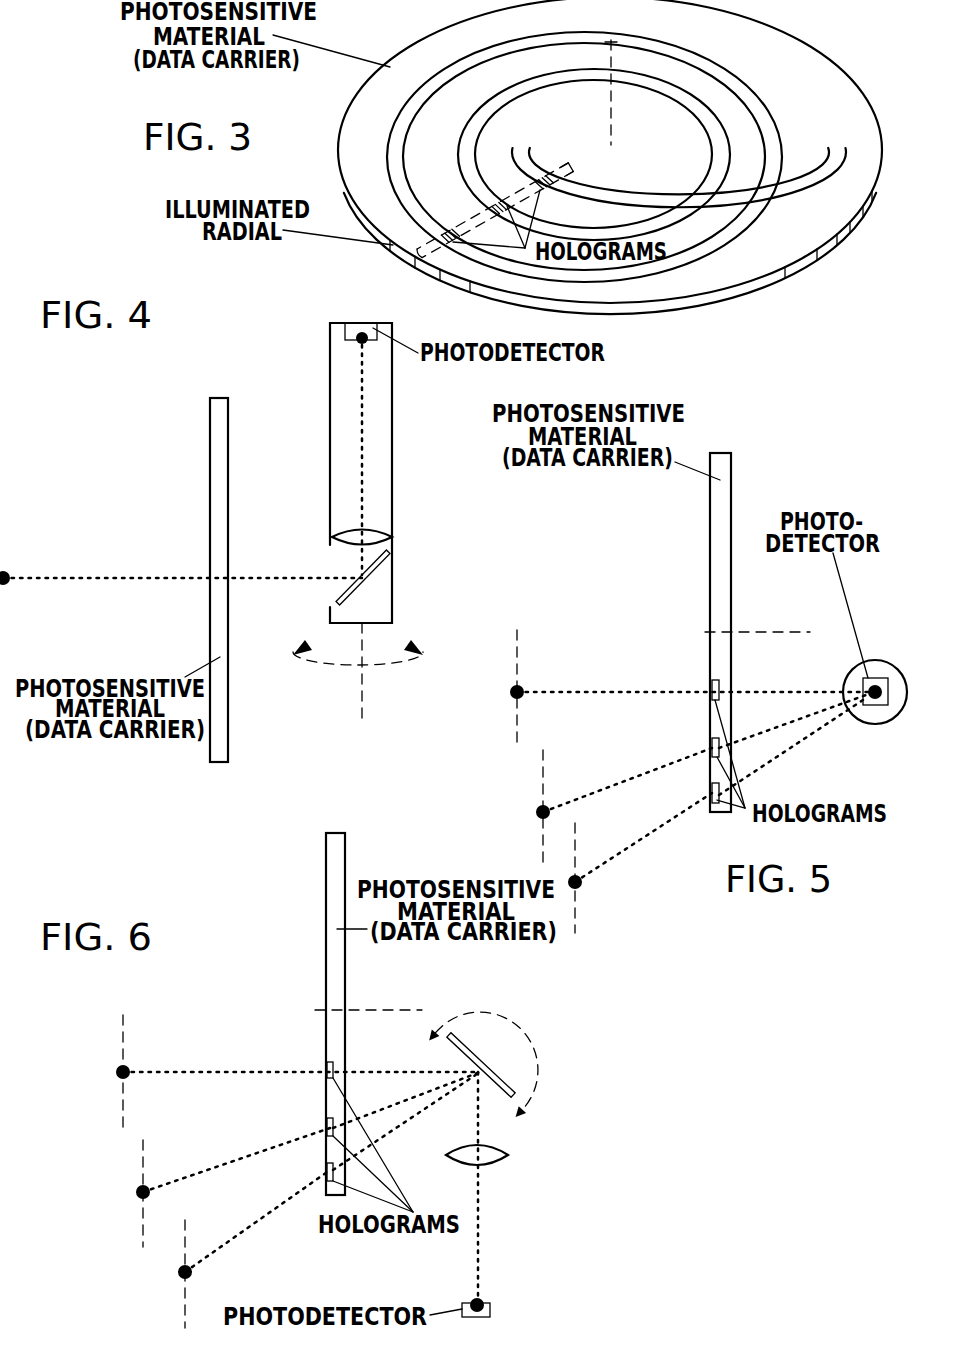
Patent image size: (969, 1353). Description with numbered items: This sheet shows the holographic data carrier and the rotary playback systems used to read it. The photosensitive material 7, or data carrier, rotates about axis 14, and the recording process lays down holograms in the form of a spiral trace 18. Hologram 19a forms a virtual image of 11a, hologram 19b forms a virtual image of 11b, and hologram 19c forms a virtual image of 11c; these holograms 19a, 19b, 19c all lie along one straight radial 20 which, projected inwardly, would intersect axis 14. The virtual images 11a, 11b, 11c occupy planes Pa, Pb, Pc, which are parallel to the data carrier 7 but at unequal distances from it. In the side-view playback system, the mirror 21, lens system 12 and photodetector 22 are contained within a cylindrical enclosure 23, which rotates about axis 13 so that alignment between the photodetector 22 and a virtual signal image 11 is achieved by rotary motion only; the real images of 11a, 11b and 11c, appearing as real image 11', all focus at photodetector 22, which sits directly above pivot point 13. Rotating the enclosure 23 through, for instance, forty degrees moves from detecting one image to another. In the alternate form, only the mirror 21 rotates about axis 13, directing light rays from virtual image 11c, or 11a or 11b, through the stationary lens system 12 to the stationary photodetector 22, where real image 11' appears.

In FIG. 3, the photosensitive material 7 is at (733, 277).
In FIG. 4, the photosensitive material 7 is at (208, 465).
In FIG. 5, the photosensitive material 7 is at (709, 505).
In FIG. 6, the photosensitive material 7 is at (330, 857).
In FIG. 4, the object 11 is at (181, 492).
In FIG. 5, the real image 11' is at (792, 722).
In FIG. 6, the real image 11' is at (437, 1187).
In FIG. 5, the virtual image 11a is at (580, 877).
In FIG. 6, the virtual image 11a is at (182, 1277).
In FIG. 5, the virtual image 11b is at (548, 807).
In FIG. 6, the virtual image 11b is at (138, 1197).
In FIG. 5, the virtual image 11c is at (523, 690).
In FIG. 6, the virtual image 11c is at (117, 1077).
In FIG. 4, the lens system 12 is at (343, 540).
In FIG. 6, the lens system 12 is at (490, 1157).
In FIG. 4, the axis 13 is at (360, 697).
In FIG. 6, the axis 13 is at (483, 1067).
In FIG. 3, the axis 14 is at (609, 114).
In FIG. 5, the axis 14 is at (777, 630).
In FIG. 6, the axis 14 is at (367, 1008).
In FIG. 3, the spiral trace 18 is at (397, 135).
In FIG. 3, the hologram 19a is at (447, 233).
In FIG. 5, the hologram 19a is at (712, 793).
In FIG. 6, the hologram 19a is at (328, 1175).
In FIG. 3, the hologram 19b is at (490, 202).
In FIG. 5, the hologram 19b is at (712, 747).
In FIG. 6, the hologram 19b is at (328, 1125).
In FIG. 3, the hologram 19c is at (530, 178).
In FIG. 5, the hologram 19c is at (712, 685).
In FIG. 6, the hologram 19c is at (328, 1068).
In FIG. 3, the radial 20 is at (575, 171).
In FIG. 4, the mirror 21 is at (343, 595).
In FIG. 6, the mirror 21 is at (458, 1041).
In FIG. 4, the photodetector 22 is at (350, 325).
In FIG. 5, the photodetector 22 is at (878, 678).
In FIG. 6, the photodetector 22 is at (490, 1309).
In FIG. 4, the cylindrical enclosure 23 is at (330, 357).
In FIG. 5, the cylindrical enclosure 23 is at (873, 723).
In FIG. 5, the plane Pa is at (576, 868).
In FIG. 6, the plane Pa is at (191, 1261).
In FIG. 5, the plane Pb is at (548, 797).
In FIG. 6, the plane Pb is at (147, 1181).
In FIG. 5, the plane Pc is at (521, 678).
In FIG. 6, the plane Pc is at (125, 1060).